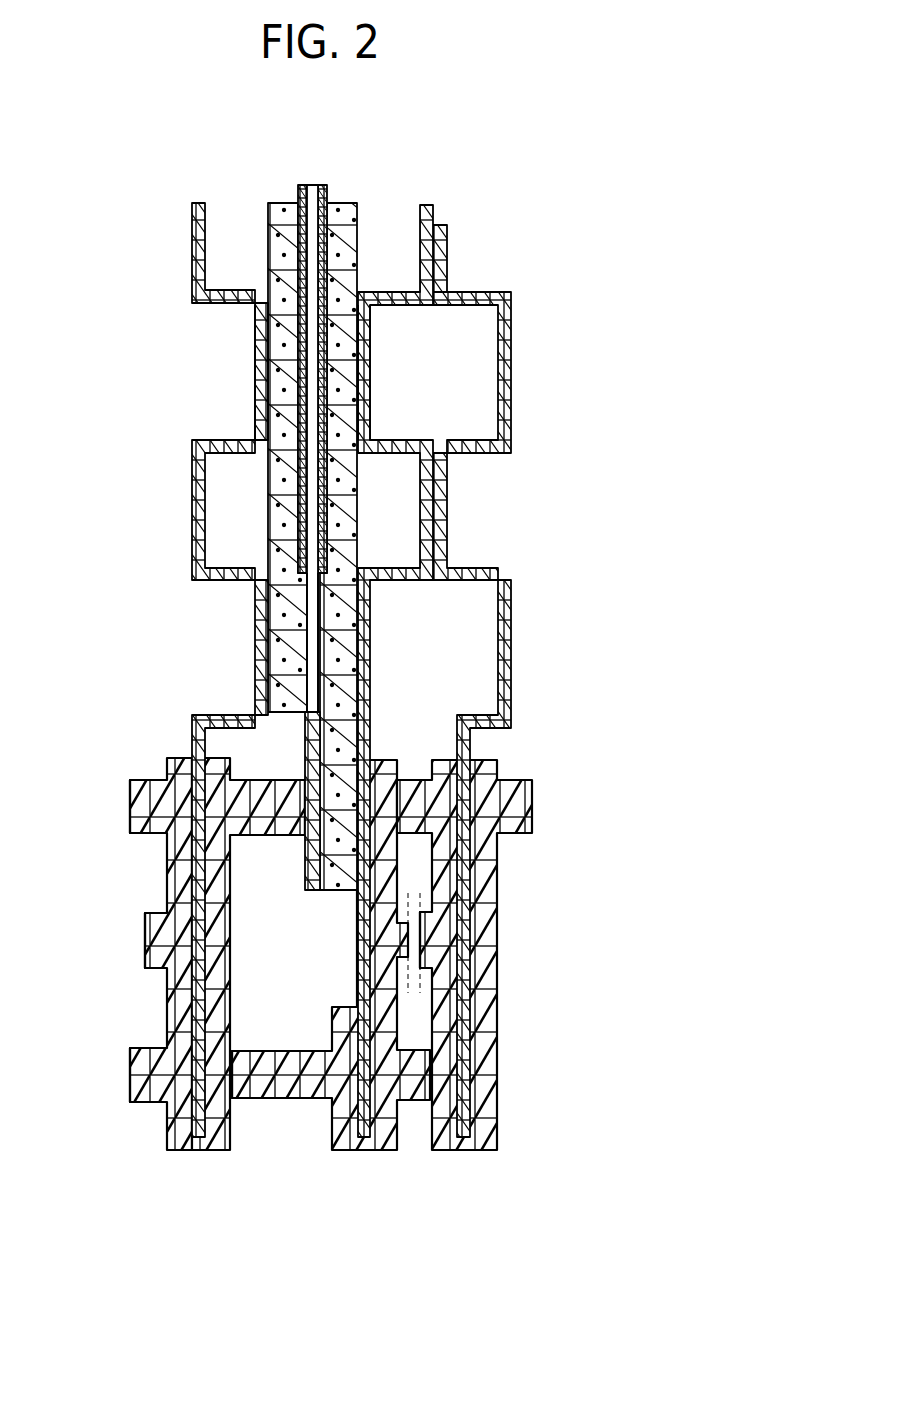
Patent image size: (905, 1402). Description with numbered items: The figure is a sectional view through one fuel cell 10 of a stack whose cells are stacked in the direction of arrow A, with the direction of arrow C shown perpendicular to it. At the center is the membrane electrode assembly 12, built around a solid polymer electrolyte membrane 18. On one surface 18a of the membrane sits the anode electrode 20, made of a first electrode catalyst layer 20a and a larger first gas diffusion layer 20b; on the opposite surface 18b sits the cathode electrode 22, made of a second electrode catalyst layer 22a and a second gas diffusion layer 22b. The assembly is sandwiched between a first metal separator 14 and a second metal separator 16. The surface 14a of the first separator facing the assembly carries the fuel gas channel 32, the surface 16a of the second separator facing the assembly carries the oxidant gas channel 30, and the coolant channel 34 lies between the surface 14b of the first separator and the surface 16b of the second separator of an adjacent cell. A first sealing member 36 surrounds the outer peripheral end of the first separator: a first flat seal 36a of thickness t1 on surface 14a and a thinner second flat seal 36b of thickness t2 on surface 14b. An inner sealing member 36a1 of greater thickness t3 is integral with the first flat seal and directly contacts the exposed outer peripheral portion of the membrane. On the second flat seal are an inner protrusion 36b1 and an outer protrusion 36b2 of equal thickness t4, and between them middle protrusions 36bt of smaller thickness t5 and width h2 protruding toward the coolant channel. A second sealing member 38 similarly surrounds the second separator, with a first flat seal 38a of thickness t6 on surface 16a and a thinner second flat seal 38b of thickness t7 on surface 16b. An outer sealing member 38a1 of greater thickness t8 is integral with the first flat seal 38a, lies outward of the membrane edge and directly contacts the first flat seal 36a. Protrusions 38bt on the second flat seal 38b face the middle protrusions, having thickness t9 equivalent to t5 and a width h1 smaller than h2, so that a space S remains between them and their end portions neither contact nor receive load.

The fuel cell 10 is at (521, 51).
The membrane electrode assembly 12 is at (312, 482).
The first metal separator 14 is at (346, 636).
The surface of the first metal separator 14a is at (280, 393).
The surface of the first metal separator 14b is at (254, 342).
The second metal separator 16 is at (440, 635).
The surface of the second metal separator 16a is at (350, 395).
The surface of the second metal separator 16b is at (437, 261).
The solid polymer electrolyte membrane 18 is at (312, 503).
The surface of the solid polymer electrolyte membrane 18a is at (305, 652).
The surface of the solid polymer electrolyte membrane 18b is at (320, 620).
The anode electrode 20 is at (189, 414).
The first electrode catalyst layer 20a is at (308, 520).
The first gas diffusion layer 20b is at (284, 491).
The cathode electrode 22 is at (436, 503).
The second electrode catalyst layer 22a is at (323, 522).
The second gas diffusion layer 22b is at (338, 492).
The oxidant gas channel 30 is at (388, 232).
The fuel gas channel 32 is at (233, 232).
The coolant channel 34 is at (470, 323).
The first sealing member 36 is at (315, 981).
The first flat seal 36a is at (248, 942).
The inner sealing member 36a1 is at (267, 790).
The second flat seal 36b is at (315, 954).
The inner protrusion 36b1 is at (147, 797).
The outer protrusion 36b2 is at (155, 1082).
The middle protrusion 36bt is at (155, 927).
The second sealing member 38 is at (391, 993).
The first flat seal 38a is at (331, 957).
The outer sealing member 38a1 is at (275, 1099).
The second flat seal 38b is at (469, 975).
The protrusion 38bt is at (430, 945).
The thickness of the first flat seal t1 is at (183, 910).
The thickness of the second flat seal t2 is at (213, 875).
The thickness of the inner sealing member t3 is at (305, 855).
The thickness of the inner and outer protrusions t4 is at (182, 1132).
The thickness of the middle protrusion t5 is at (182, 998).
The thickness of the first flat seal t6 is at (378, 980).
The thickness of the second flat seal t7 is at (350, 1030).
The thickness of the outer sealing member t8 is at (332, 1035).
The thickness of the protrusion t9 is at (452, 902).
The width of the protrusion h1 is at (408, 957).
The width of the middle protrusion h2 is at (432, 912).
The space S is at (383, 990).
The stacking direction A is at (553, 1210).
The direction of arrow C is at (585, 1110).